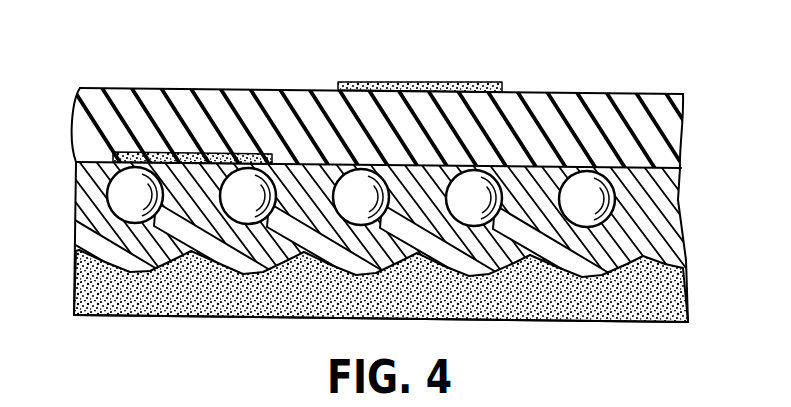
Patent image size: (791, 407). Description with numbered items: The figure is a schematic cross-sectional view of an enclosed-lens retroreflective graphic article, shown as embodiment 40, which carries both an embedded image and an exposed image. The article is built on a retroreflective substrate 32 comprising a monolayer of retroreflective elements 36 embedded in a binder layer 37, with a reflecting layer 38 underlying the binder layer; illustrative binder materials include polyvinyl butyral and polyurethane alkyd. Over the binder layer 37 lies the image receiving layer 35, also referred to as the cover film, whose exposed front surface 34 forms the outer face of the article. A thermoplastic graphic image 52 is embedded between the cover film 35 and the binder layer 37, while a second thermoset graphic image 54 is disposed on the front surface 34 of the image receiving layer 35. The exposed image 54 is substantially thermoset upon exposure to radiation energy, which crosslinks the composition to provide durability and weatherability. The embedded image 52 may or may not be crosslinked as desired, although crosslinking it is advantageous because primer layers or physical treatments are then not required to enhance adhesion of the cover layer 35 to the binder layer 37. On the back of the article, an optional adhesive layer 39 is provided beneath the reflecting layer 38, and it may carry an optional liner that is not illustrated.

The retroreflective substrate 32 is at (392, 162).
The front surface 34 is at (143, 88).
The image receiving layer 35 is at (90, 98).
The retroreflective elements 36 is at (585, 195).
The binder layer 37 is at (75, 172).
The reflecting layer 38 is at (90, 238).
The adhesive layer 39 is at (75, 292).
The embodiment 40 is at (392, 162).
The thermoplastic graphic image 52 is at (203, 153).
The second thermoset graphic image 54 is at (392, 85).